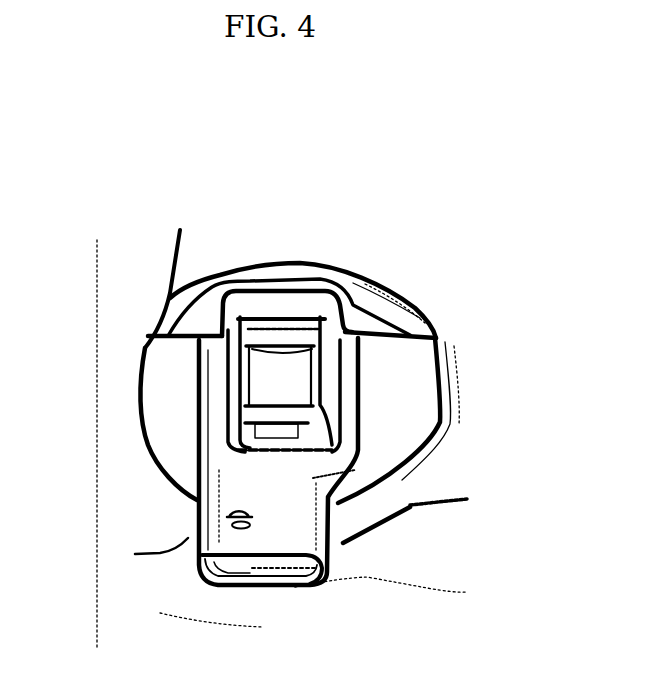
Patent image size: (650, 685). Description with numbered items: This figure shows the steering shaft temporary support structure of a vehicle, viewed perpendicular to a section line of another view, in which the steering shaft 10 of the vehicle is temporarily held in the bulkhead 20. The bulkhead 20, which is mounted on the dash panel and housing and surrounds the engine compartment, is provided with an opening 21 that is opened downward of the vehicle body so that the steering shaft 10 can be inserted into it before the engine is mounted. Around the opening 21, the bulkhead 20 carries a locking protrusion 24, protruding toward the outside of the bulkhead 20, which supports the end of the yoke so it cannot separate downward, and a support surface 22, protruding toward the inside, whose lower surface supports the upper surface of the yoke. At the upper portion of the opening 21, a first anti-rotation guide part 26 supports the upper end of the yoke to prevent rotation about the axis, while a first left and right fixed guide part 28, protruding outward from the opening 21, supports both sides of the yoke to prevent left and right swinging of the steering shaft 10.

The steering shaft 10 is at (355, 540).
The bulkhead 20 is at (197, 216).
The opening 21 is at (178, 447).
The support surface 22 is at (294, 265).
The locking protrusion 24 is at (266, 303).
The first anti-rotation guide part 26 is at (207, 338).
The first left and right fixed guide part 28 is at (333, 268).